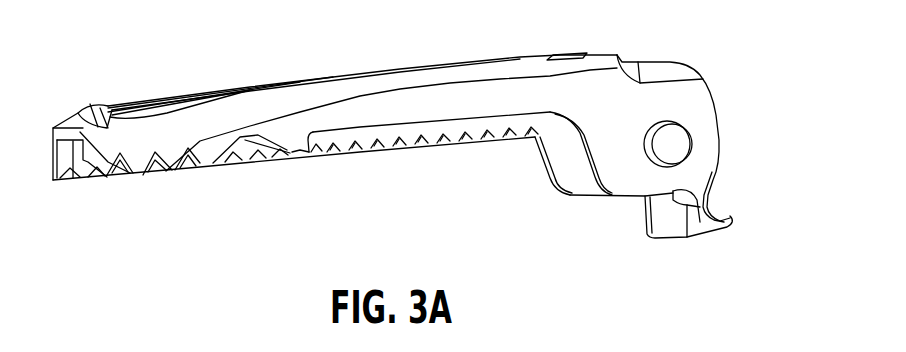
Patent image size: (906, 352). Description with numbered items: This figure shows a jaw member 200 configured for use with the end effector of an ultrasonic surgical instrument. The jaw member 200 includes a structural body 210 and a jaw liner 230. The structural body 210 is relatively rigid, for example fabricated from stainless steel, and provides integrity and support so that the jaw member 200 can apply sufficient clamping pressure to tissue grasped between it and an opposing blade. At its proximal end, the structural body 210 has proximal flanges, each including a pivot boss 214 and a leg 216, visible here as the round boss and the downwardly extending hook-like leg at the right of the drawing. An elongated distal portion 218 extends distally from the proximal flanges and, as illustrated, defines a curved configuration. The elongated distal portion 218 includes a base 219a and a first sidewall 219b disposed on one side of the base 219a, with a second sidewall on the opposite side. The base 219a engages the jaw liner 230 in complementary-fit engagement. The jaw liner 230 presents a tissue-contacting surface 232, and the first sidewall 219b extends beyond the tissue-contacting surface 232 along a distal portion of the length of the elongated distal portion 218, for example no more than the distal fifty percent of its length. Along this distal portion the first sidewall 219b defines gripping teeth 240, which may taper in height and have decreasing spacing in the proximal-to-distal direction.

The jaw member 200 is at (276, 29).
The structural body 210 is at (540, 72).
The pivot boss 214 is at (678, 148).
The leg 216 is at (667, 238).
The elongated distal portion 218 is at (315, 113).
The base 219a is at (150, 102).
The first sidewall 219b is at (208, 162).
The jaw liner 230 is at (397, 136).
The tissue-contacting surface 232 is at (319, 166).
The gripping teeth 240 is at (177, 172).